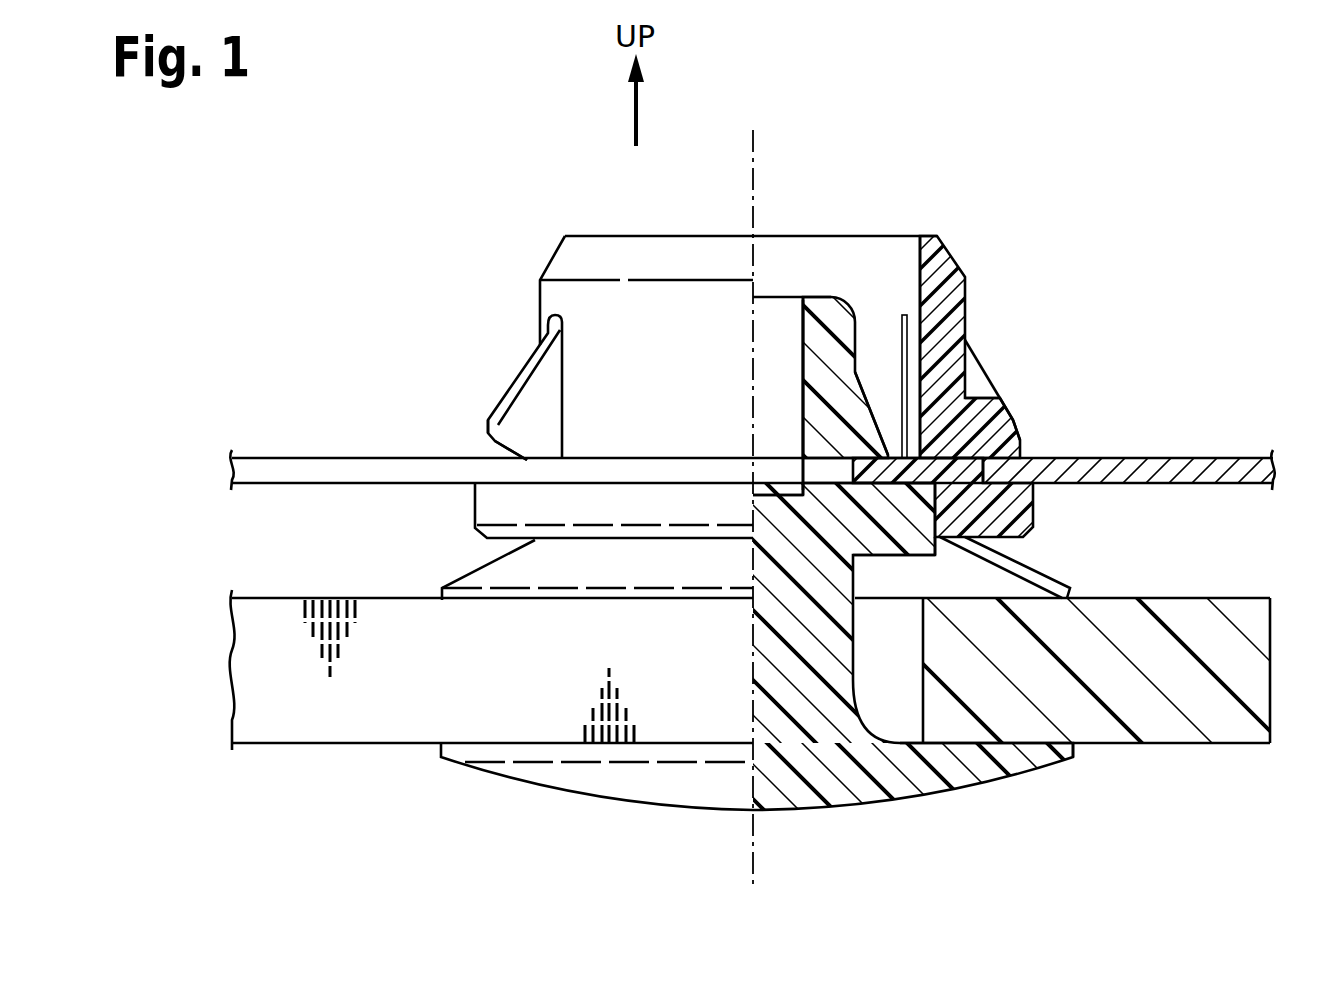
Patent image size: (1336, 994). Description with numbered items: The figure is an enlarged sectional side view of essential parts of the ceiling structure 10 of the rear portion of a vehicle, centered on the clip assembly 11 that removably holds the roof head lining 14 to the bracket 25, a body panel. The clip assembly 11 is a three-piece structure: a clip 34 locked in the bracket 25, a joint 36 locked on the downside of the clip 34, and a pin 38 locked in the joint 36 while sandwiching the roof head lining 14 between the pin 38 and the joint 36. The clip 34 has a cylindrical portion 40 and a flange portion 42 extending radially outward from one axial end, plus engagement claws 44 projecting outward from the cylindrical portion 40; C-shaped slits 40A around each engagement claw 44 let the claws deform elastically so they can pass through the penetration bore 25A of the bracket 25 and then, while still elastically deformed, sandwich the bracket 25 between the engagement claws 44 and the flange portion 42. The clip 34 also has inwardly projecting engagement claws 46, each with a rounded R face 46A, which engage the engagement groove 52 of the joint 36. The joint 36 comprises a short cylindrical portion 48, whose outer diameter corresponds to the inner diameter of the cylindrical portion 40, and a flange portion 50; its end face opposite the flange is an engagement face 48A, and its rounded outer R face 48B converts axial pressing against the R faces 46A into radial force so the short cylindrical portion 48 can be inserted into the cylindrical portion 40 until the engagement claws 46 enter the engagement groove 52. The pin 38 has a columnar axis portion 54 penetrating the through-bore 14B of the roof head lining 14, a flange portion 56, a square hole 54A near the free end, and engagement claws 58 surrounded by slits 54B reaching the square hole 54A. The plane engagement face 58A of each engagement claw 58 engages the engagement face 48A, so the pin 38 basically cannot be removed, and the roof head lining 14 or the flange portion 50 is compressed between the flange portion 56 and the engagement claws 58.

The ceiling structure 10 is at (1107, 157).
The clip assembly 11 is at (812, 542).
The roof head lining 14 is at (1250, 598).
The through-bore 14B is at (923, 630).
The bracket 25 is at (1253, 458).
The penetration bore 25A is at (1003, 437).
The clip 34 is at (981, 258).
The joint 36 is at (1087, 583).
The pin 38 is at (819, 827).
The cylindrical portion 40 is at (940, 237).
The slits 40A is at (885, 395).
The flange portion 42 is at (490, 512).
The engagement claws 44 is at (505, 415).
The engagement claws 46 is at (1033, 493).
The R face 46A is at (855, 560).
The short cylindrical portion 48 is at (882, 558).
The engagement face 48A is at (523, 363).
The R face 48B is at (500, 448).
The flange portion 50 is at (492, 565).
The engagement groove 52 is at (915, 701).
The axis portion 54 is at (820, 347).
The square hole 54A is at (795, 370).
The slits 54B is at (790, 440).
The flange portion 56 is at (913, 783).
The engagement claws 58 is at (850, 340).
The engagement face 58A is at (830, 500).